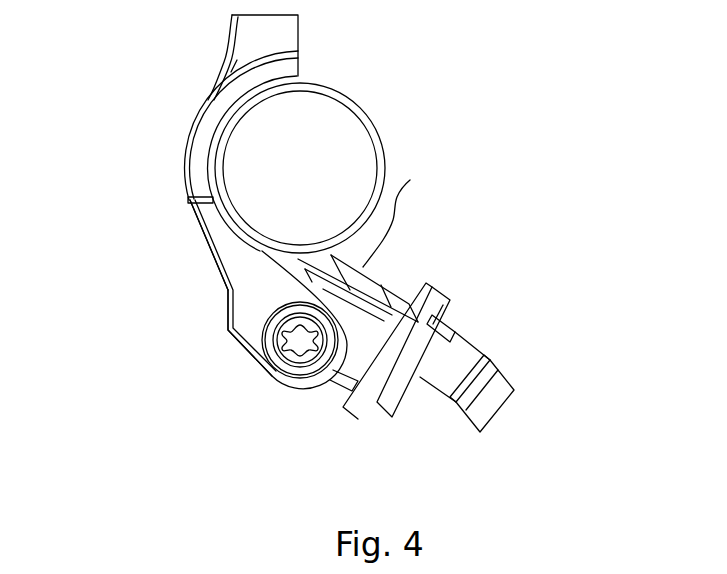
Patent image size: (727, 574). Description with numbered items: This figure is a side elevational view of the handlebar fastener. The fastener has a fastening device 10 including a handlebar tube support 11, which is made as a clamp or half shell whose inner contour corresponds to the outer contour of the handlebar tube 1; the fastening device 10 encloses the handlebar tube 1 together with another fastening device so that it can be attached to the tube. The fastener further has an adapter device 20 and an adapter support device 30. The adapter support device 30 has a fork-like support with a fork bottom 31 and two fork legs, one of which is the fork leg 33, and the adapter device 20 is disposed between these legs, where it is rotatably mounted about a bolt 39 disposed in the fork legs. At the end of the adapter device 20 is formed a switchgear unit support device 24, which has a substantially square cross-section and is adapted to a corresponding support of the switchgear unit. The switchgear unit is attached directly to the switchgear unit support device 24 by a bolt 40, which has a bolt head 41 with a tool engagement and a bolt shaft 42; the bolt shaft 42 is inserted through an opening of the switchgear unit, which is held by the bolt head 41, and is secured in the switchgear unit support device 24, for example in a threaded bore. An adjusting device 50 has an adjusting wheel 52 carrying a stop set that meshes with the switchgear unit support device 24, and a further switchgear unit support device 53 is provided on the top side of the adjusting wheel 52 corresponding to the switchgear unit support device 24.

The handlebar tube 1 is at (380, 138).
The fastening device 10 is at (197, 170).
The handlebar tube support 11 is at (197, 107).
The adapter device 20 is at (410, 180).
The switchgear unit support device 24 is at (383, 313).
The adapter support device 30 is at (237, 247).
The fork bottom 31 is at (213, 222).
The fork leg 33 is at (257, 287).
The bolt 39 is at (280, 337).
The bolt 40 is at (473, 358).
The bolt head 41 is at (498, 410).
The bolt shaft 42 is at (455, 392).
The adjusting device 50 is at (447, 303).
The adjusting wheel 52 is at (343, 408).
The switchgear unit support device 53 is at (452, 334).